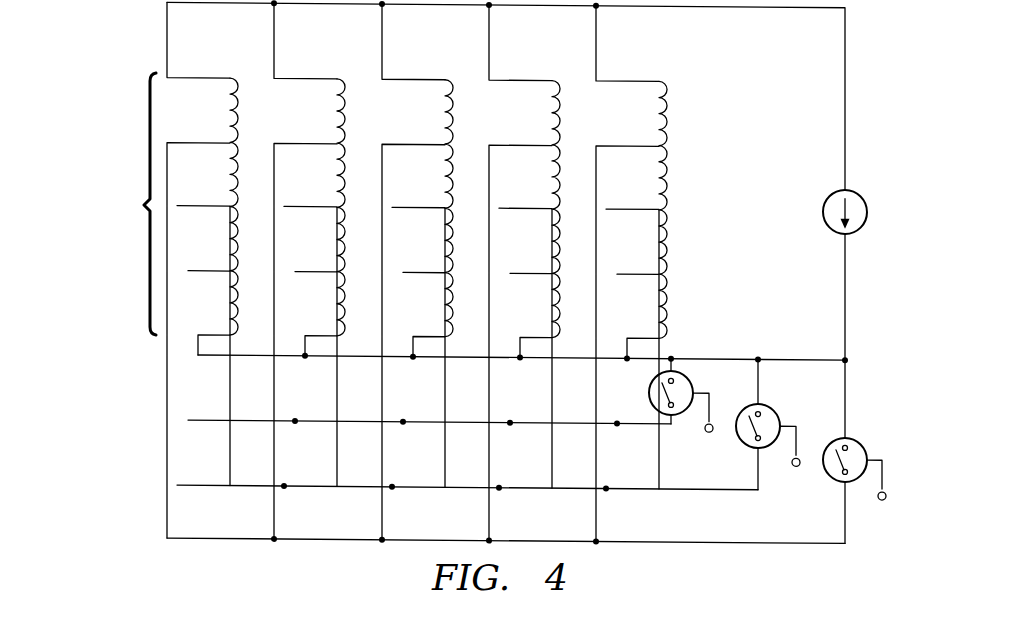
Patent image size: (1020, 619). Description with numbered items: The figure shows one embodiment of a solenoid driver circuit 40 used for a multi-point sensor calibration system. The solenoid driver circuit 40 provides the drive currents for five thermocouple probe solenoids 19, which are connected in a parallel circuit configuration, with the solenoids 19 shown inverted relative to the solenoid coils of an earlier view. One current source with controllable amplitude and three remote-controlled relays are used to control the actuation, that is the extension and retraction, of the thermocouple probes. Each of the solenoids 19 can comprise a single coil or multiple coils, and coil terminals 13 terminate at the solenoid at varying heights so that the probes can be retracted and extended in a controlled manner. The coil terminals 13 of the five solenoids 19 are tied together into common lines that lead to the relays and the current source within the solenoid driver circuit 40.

The solenoid driver circuit 40 is at (118, 27).
The coil terminals 13 is at (382, 538).
The thermocouple probe solenoids 19 is at (238, 78).